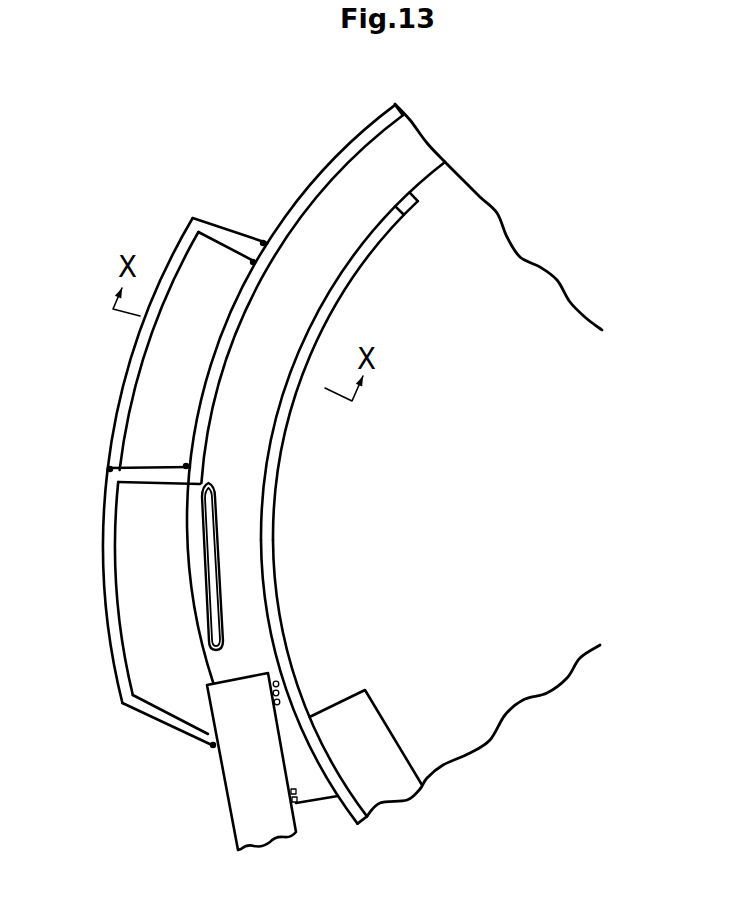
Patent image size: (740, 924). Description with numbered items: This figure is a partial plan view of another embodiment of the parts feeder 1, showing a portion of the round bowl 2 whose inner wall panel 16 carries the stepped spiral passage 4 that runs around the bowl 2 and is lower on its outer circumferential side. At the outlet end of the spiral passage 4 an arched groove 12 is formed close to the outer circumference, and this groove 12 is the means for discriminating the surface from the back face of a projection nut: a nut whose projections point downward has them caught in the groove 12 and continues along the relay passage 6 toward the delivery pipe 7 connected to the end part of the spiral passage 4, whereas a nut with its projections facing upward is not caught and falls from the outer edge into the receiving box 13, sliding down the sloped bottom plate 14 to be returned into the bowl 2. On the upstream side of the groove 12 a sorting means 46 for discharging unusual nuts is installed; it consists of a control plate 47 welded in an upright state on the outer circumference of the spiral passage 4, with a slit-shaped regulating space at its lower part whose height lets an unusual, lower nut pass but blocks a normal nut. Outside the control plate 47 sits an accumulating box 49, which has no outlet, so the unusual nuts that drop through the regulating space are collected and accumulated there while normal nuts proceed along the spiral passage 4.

The parts feeder 1 is at (340, 136).
The bowl 2 is at (549, 508).
The spiral passage 4 is at (383, 204).
The relay passage 6 is at (256, 645).
The delivery pipe 7 is at (230, 818).
The fastening groove 12 is at (217, 553).
The receiving box 13 is at (119, 655).
The sloped bottom plate 14 is at (138, 592).
The inner wall panel 16 is at (355, 278).
The sorting means 46 is at (224, 319).
The control plate 47 is at (203, 387).
The accumulating box 49 is at (124, 380).